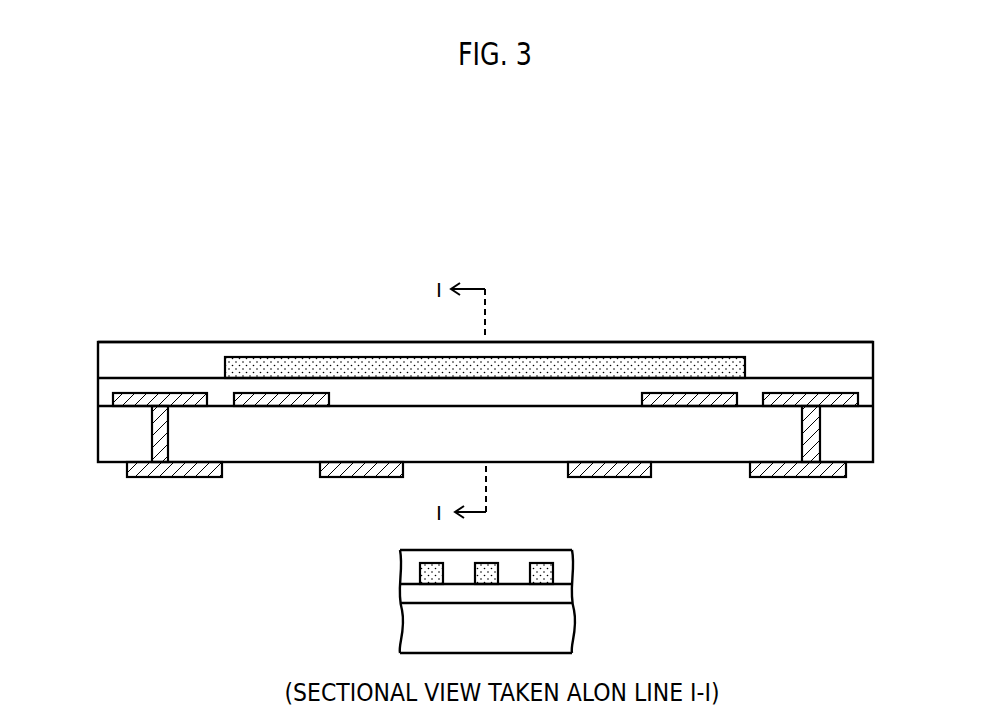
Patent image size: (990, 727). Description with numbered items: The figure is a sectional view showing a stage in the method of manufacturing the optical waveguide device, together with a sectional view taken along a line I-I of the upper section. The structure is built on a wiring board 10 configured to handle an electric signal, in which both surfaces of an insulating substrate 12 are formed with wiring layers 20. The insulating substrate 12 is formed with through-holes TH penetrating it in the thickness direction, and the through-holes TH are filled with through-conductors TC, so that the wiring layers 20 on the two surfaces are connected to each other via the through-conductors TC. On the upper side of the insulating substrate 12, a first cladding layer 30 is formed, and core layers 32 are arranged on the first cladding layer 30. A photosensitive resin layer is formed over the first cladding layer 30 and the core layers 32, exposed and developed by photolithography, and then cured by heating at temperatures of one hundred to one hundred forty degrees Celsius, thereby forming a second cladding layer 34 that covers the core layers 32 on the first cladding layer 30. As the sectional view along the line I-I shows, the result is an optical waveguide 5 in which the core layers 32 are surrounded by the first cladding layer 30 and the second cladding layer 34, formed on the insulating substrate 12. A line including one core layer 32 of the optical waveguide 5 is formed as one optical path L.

The optical waveguide 5 is at (953, 307).
The wiring board 10 is at (953, 392).
The insulating substrate 12 is at (860, 442).
The wiring layer 20 is at (855, 397).
The first cladding layer 30 is at (862, 383).
The core layer 32 is at (855, 369).
The second cladding layer 34 is at (843, 350).
The through-hole TH is at (820, 423).
The through-conductor TC is at (812, 440).
The optical path L is at (751, 351).